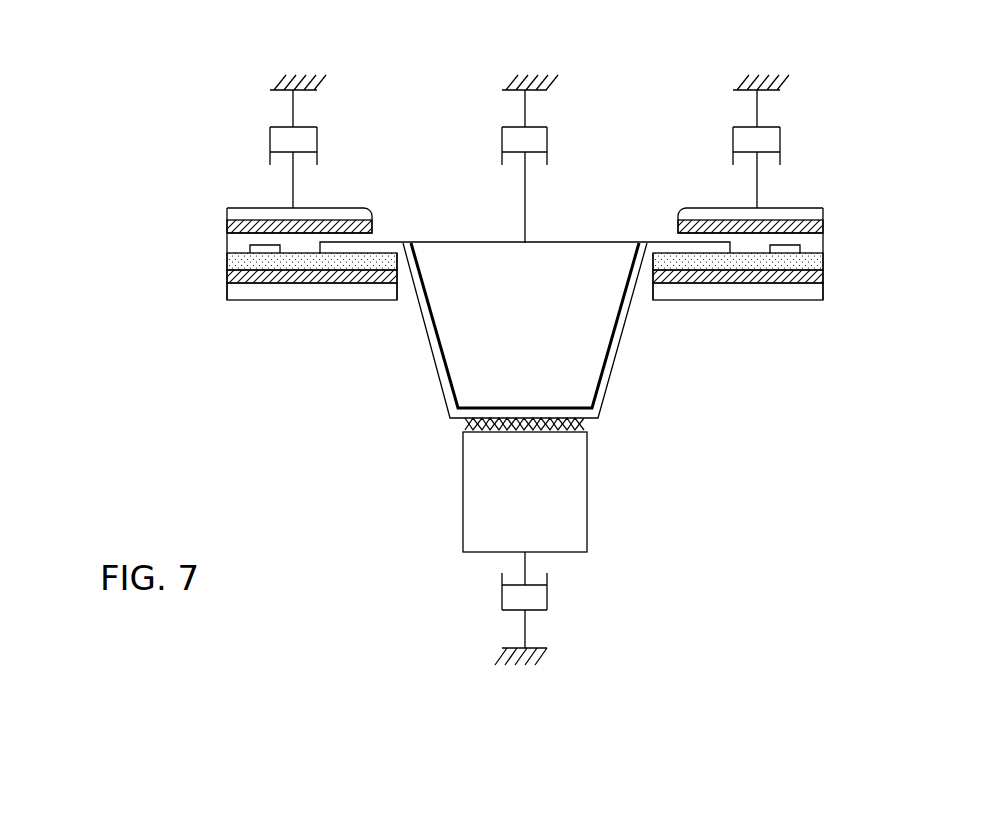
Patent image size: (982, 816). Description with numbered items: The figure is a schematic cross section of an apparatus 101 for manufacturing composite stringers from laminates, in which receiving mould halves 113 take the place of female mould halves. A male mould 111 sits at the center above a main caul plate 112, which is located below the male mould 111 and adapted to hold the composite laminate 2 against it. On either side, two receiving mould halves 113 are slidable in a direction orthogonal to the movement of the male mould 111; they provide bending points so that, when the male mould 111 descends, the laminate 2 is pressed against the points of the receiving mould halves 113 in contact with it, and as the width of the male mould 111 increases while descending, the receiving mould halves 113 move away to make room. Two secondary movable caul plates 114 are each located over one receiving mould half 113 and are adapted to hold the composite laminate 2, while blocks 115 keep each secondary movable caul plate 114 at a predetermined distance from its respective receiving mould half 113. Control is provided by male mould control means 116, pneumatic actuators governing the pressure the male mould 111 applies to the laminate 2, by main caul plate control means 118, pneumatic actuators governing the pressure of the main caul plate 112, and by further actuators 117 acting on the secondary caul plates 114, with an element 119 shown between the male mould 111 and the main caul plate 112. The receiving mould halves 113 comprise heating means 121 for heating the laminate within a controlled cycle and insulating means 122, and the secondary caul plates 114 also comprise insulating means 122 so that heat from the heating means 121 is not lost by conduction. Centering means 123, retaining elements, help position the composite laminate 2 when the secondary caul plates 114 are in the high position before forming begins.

The apparatus 101 is at (428, 130).
The composite laminate 2 is at (393, 243).
The male mould 111 is at (568, 253).
The main caul plate 112 is at (474, 470).
The receiving mould halves 113 is at (297, 293).
The secondary movable caul plates 114 is at (342, 207).
The blocks 115 is at (228, 243).
The male mould control means 116 is at (527, 101).
The side damper 117 is at (290, 107).
The main caul plate control means 118 is at (528, 628).
The spring 119 is at (583, 428).
The heating means 121 is at (228, 262).
The insulating means 122 is at (228, 222).
The centering means 123 is at (248, 252).